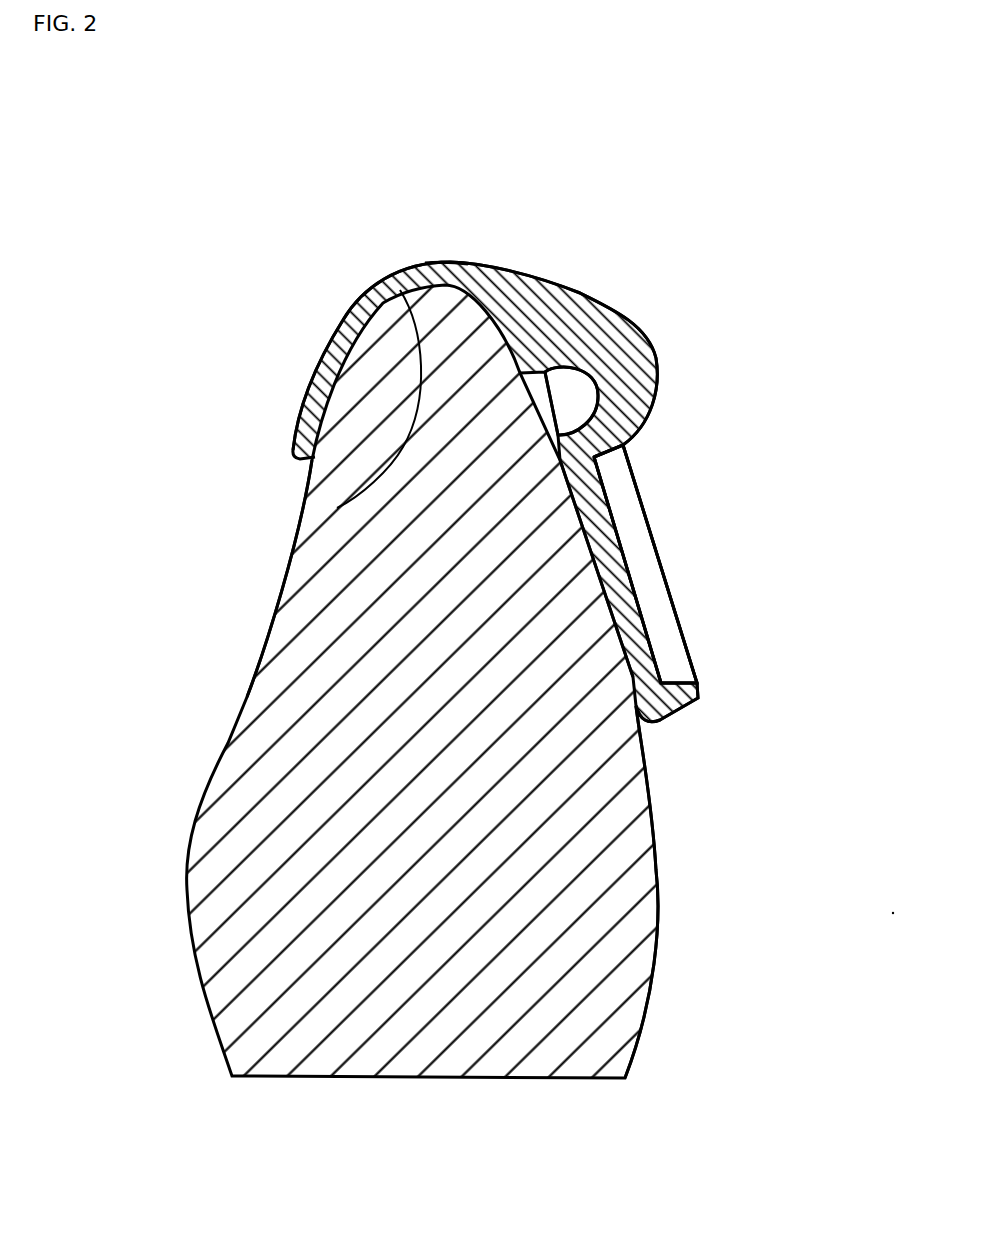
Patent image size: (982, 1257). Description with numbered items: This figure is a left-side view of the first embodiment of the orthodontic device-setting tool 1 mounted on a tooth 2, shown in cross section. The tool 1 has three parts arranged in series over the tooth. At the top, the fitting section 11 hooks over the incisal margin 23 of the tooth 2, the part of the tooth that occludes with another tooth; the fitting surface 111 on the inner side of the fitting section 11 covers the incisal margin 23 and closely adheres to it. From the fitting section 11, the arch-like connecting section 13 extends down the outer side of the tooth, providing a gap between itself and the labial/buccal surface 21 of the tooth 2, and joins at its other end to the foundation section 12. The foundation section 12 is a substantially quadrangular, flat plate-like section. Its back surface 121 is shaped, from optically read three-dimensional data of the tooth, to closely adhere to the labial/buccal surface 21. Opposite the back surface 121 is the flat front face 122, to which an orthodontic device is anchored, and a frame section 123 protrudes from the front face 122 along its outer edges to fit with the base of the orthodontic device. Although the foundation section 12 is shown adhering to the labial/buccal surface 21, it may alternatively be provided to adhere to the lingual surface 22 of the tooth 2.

The orthodontic device-setting tool 1 is at (270, 330).
The fitting section 11 is at (356, 290).
The fitting surface 111 is at (437, 287).
The connecting section 13 is at (582, 330).
The foundation section 12 is at (656, 712).
The back surface 121 is at (613, 615).
The front face 122 is at (625, 543).
The frame section 123 is at (698, 697).
The tooth 2 is at (157, 963).
The labial/buccal surface 21 is at (657, 877).
The lingual surface 22 is at (248, 690).
The incisal margin 23 is at (337, 508).